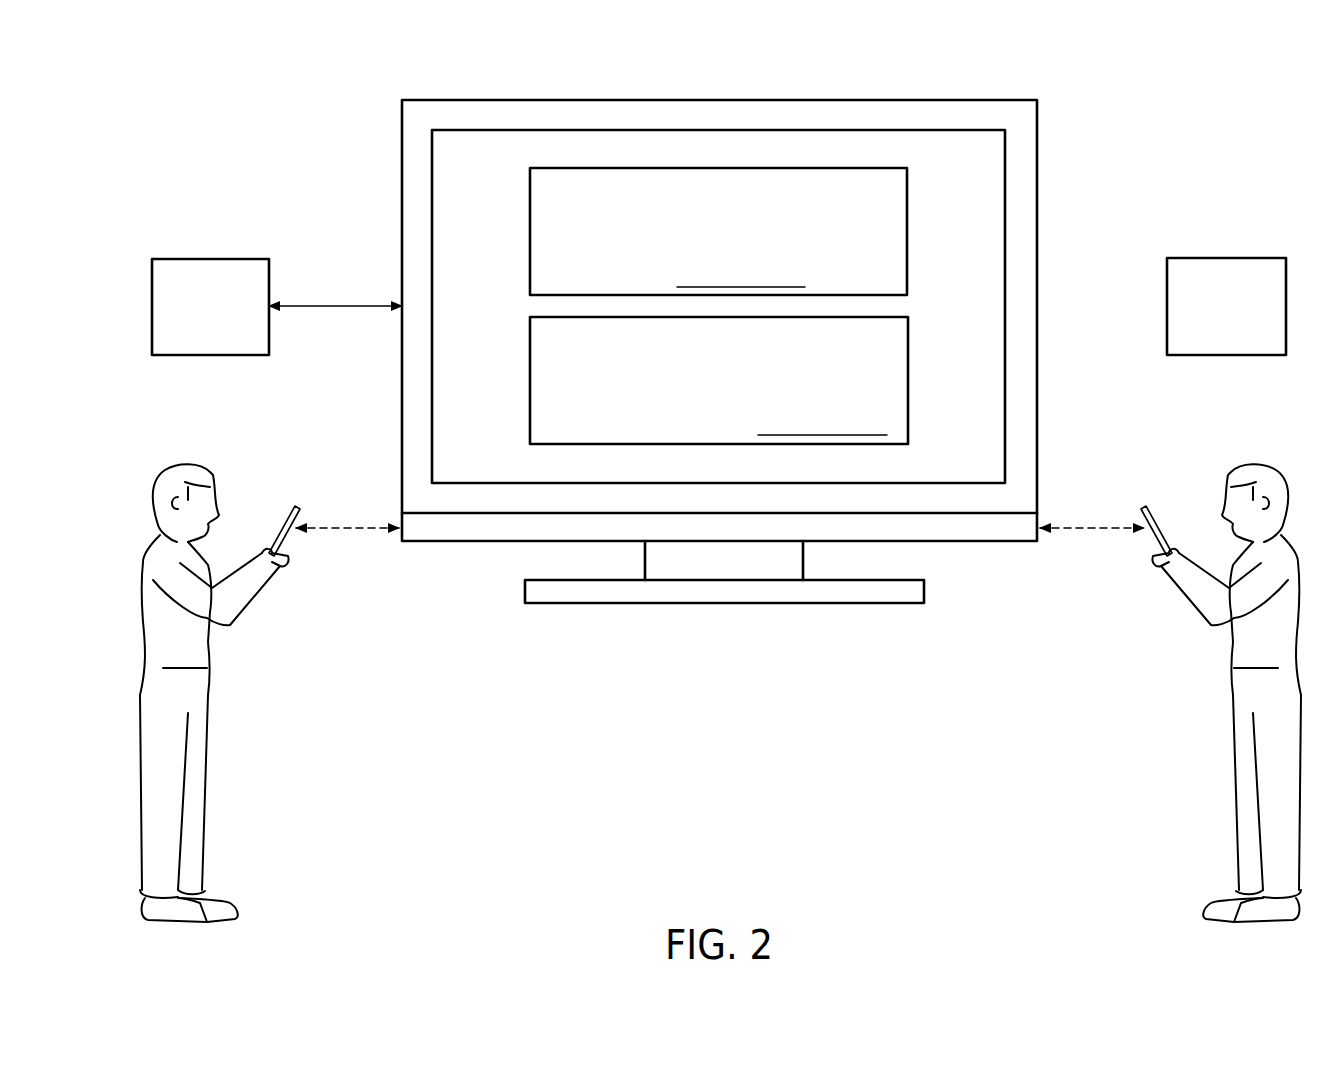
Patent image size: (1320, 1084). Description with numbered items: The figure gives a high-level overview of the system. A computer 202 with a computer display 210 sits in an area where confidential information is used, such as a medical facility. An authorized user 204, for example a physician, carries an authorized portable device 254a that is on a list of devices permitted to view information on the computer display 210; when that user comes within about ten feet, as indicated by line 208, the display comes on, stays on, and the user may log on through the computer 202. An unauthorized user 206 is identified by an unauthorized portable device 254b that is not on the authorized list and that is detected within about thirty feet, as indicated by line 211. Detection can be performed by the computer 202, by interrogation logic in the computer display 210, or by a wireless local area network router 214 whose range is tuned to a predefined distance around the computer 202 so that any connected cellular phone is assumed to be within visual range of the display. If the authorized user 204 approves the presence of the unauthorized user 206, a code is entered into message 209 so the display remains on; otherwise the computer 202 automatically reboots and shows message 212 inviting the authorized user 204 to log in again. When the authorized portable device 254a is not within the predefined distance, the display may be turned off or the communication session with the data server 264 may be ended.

The computer 202 is at (975, 533).
The authorized user 204 is at (253, 646).
The unauthorized user 206 is at (1188, 646).
The line 208 is at (344, 522).
The message 209 is at (937, 245).
The computer display 210 is at (382, 125).
The line 211 is at (1095, 523).
The message 212 is at (939, 395).
The wireless local area network router 214 is at (1247, 347).
The authorized portable device 254a is at (270, 525).
The unauthorized portable device 254b is at (1171, 525).
The data server 264 is at (234, 347).